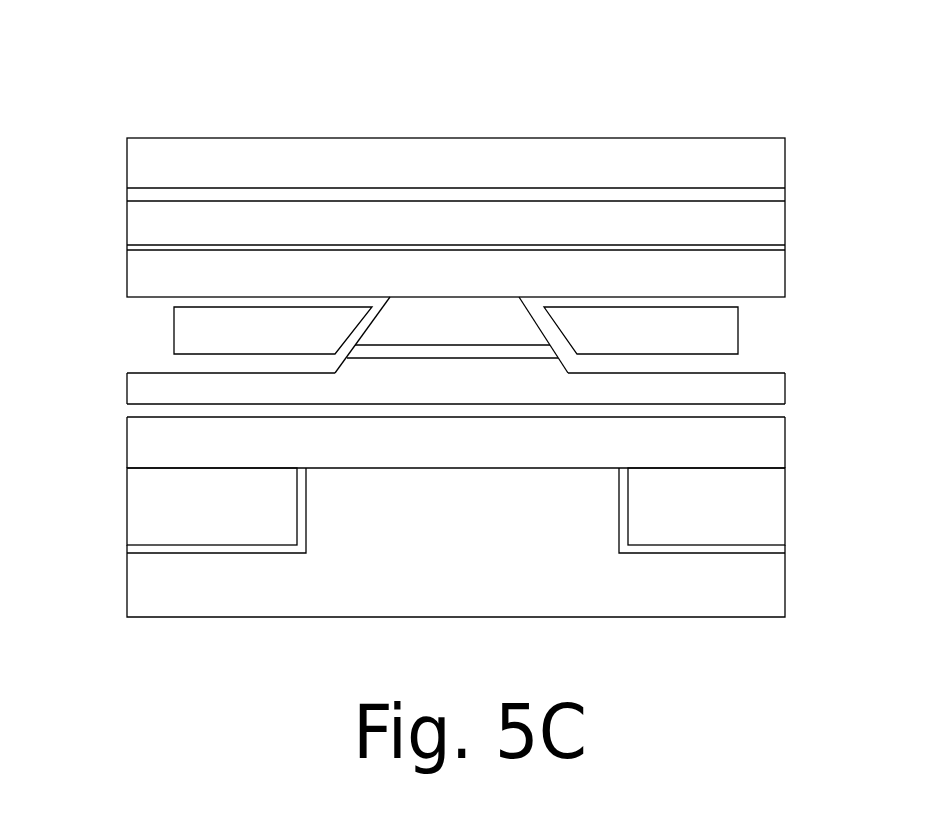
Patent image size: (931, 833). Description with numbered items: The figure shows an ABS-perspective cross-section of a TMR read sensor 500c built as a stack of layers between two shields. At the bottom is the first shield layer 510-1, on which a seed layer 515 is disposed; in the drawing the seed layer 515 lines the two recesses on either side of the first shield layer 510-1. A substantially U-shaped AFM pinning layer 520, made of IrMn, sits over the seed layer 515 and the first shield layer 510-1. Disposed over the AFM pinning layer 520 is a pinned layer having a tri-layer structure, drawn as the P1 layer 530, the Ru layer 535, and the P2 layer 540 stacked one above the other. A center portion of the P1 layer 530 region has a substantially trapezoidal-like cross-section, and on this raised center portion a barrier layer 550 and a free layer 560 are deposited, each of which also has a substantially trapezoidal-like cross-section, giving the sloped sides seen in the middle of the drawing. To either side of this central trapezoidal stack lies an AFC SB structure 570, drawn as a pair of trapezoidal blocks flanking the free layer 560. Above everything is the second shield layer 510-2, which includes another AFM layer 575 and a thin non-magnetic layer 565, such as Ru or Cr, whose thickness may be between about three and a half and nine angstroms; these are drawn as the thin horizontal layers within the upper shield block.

The TMR read sensor 500c is at (777, 86).
The second shield layer 510-2 is at (456, 217).
The AFM layer 575 is at (785, 195).
The thin non-magnetic layer 565 is at (785, 247).
The AFC SB structure 570 is at (456, 330).
The free layer 560 is at (451, 335).
The barrier layer 550 is at (470, 353).
The P2 layer 540 is at (456, 387).
The Ru layer 535 is at (785, 409).
The P1 layer 530 is at (456, 442).
The AFM pinning layer 520 is at (456, 506).
The seed layer 515 is at (128, 551).
The first shield layer 510-1 is at (456, 581).